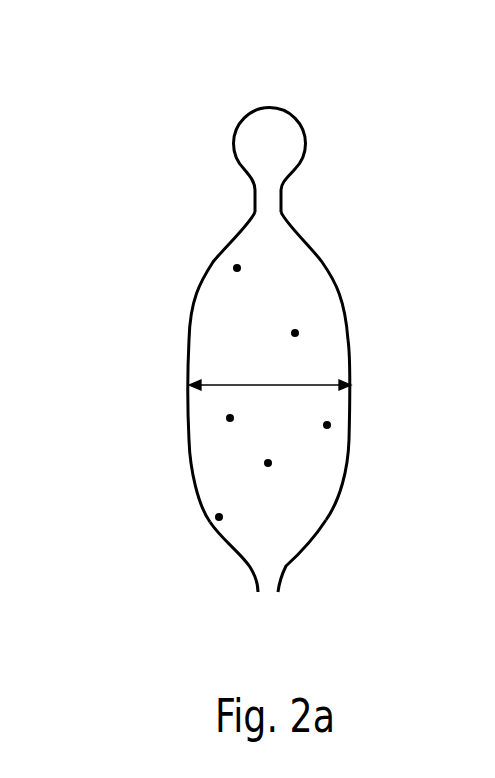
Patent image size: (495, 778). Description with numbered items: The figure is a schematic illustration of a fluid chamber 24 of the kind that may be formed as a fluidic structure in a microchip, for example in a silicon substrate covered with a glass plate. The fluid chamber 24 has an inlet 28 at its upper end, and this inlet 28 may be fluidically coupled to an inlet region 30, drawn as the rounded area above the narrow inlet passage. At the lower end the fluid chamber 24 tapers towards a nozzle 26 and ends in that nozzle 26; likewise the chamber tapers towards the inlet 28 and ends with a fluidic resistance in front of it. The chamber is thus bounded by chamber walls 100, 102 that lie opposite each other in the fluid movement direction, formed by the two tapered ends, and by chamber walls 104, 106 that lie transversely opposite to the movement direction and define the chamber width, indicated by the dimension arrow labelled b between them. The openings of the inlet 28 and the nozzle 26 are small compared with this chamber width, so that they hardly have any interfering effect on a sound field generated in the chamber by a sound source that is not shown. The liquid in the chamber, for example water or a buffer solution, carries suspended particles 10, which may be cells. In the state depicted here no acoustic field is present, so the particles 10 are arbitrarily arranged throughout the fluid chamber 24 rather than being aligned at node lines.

The inlet region 30 is at (270, 135).
The inlet 28 is at (282, 200).
The chamber wall 100 is at (234, 238).
The fluid chamber 24 is at (315, 367).
The chamber wall 104 is at (187, 398).
The chamber wall 106 is at (351, 412).
The particles 10 is at (272, 463).
The chamber wall 102 is at (305, 552).
The nozzle 26 is at (268, 583).